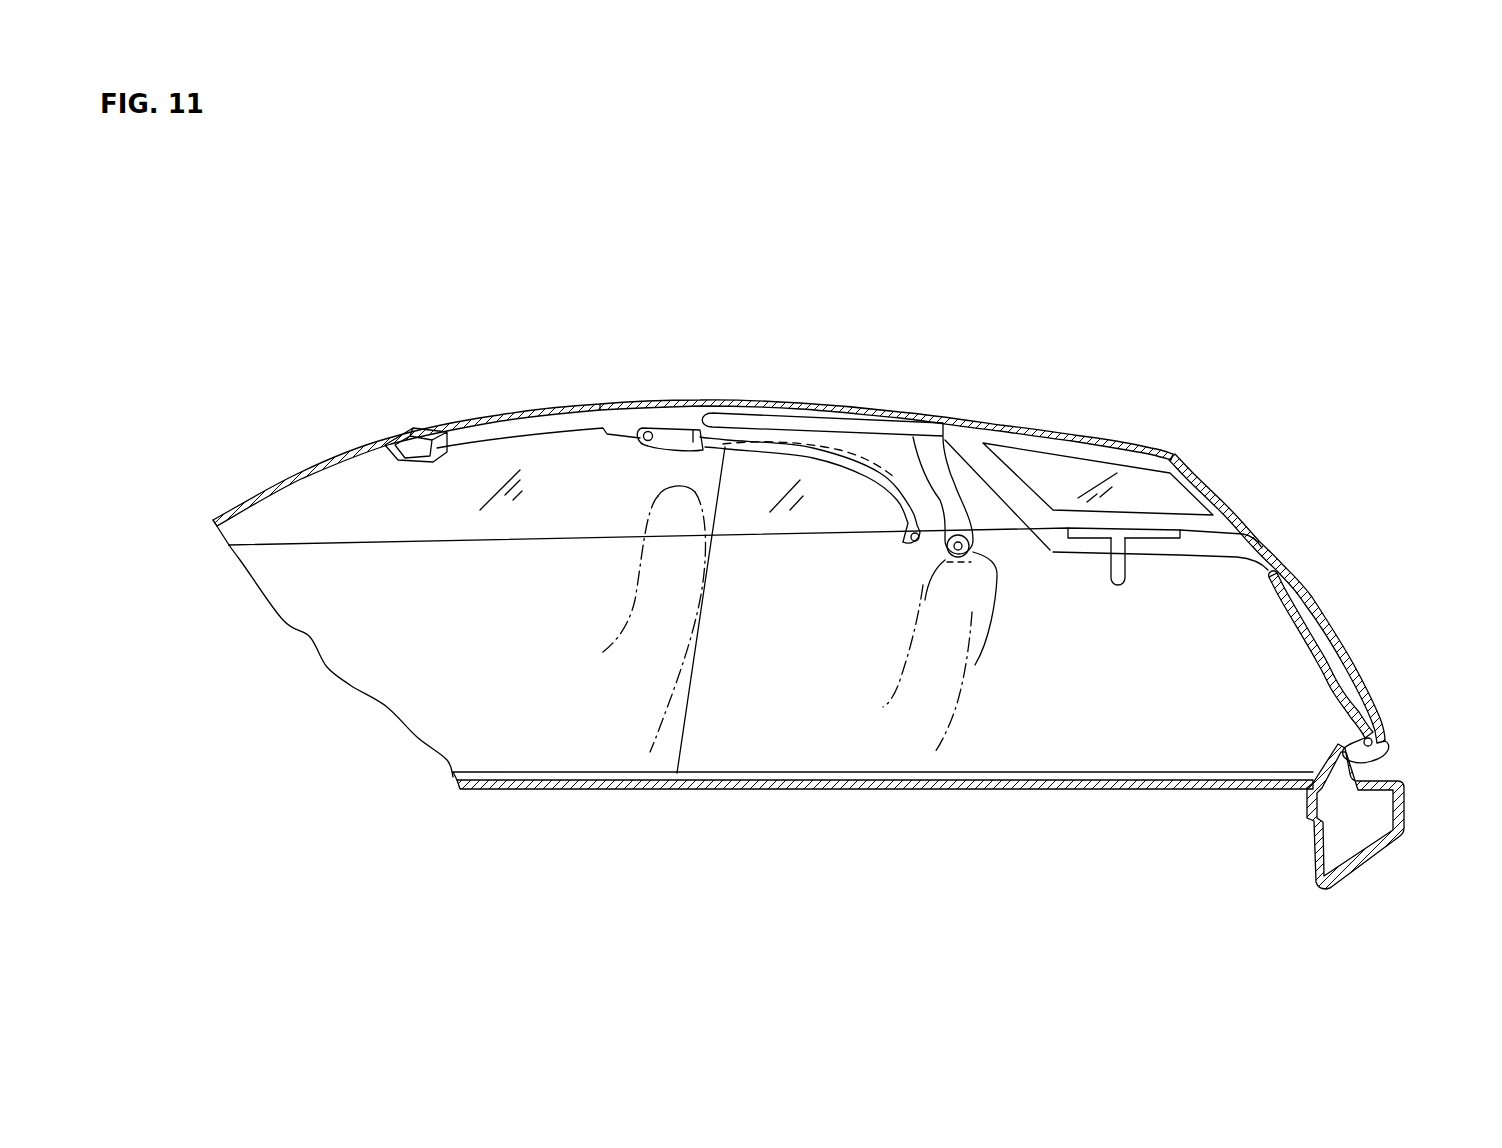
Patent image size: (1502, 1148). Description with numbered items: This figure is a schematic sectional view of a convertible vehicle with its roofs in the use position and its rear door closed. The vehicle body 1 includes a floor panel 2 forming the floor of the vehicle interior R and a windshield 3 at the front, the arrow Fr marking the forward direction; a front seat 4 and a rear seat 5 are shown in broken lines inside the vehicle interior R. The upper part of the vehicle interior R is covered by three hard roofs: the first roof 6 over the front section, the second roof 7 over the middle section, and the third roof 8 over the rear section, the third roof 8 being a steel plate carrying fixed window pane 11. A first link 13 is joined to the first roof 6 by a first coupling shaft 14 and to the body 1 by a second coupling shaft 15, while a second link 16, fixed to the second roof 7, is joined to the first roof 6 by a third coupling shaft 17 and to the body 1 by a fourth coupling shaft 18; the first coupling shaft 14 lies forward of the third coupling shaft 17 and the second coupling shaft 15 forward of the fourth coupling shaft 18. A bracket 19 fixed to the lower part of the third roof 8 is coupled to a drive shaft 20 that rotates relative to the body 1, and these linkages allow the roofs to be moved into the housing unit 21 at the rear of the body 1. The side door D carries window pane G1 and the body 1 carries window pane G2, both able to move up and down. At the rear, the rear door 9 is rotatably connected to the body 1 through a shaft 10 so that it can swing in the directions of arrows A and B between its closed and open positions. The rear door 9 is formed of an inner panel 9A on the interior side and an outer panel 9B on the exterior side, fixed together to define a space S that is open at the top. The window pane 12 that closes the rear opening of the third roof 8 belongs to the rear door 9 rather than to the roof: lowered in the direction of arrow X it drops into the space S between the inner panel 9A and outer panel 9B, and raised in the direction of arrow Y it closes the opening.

The vehicle body 1 is at (640, 797).
The floor panel 2 is at (895, 795).
The windshield 3 is at (313, 463).
The front seat 4 is at (692, 705).
The rear seat 5 is at (886, 680).
The first roof 6 is at (598, 402).
The second roof 7 is at (788, 402).
The third roof 8 is at (1110, 440).
The rear door 9 is at (1318, 598).
The inner panel 9A is at (1325, 686).
The outer panel 9B is at (1362, 670).
The shaft 10 is at (1383, 723).
The window pane 11 is at (1143, 490).
The window pane 12 is at (1205, 515).
The first link 13 is at (833, 465).
The first coupling shaft 14 is at (650, 420).
The second coupling shaft 15 is at (912, 548).
The second link 16 is at (935, 462).
The third coupling shaft 17 is at (692, 435).
The fourth coupling shaft 18 is at (975, 550).
The bracket 19 is at (1153, 545).
The drive shaft 20 is at (1118, 585).
The housing unit 21 is at (1210, 742).
The vehicle interior R is at (512, 643).
The side door D is at (498, 742).
The window pane G1 is at (378, 502).
The window pane G2 is at (752, 513).
The space S is at (1316, 645).
The front direction Fr is at (307, 657).
The arrow A is at (1320, 563).
The arrow B is at (1385, 541).
The arrow X is at (1205, 455).
The arrow Y is at (1280, 500).